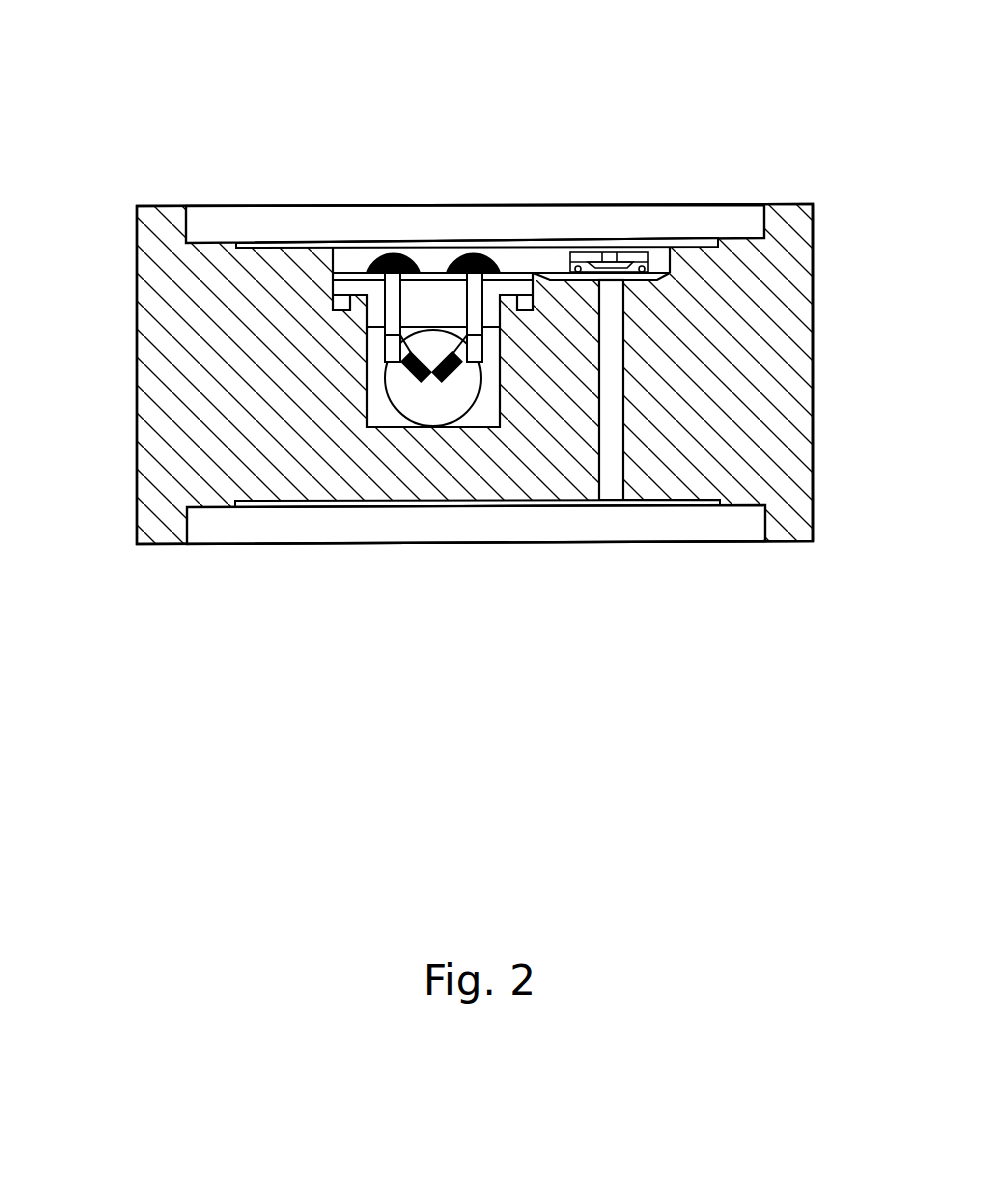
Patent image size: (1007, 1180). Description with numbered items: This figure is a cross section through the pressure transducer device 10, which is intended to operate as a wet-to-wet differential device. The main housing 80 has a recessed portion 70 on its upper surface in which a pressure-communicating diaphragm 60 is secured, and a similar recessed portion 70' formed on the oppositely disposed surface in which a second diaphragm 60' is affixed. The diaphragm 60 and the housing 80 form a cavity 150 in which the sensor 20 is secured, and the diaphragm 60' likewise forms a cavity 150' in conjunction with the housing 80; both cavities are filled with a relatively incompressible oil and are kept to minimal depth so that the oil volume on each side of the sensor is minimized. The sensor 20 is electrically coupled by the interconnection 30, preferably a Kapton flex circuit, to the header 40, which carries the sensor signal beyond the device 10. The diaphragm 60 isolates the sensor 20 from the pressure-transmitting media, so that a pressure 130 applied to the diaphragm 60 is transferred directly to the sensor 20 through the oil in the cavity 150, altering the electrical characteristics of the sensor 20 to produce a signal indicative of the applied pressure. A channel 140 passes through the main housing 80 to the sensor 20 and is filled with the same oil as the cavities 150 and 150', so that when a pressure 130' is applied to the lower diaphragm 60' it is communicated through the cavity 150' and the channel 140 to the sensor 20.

The device 10 is at (106, 152).
The sensor 20 is at (672, 281).
The interconnection 30 is at (333, 277).
The header 40 is at (437, 309).
The pressure-communicating diaphragm 60 is at (635, 206).
The diaphragm 60' is at (659, 554).
The recessed portion 70 is at (475, 184).
The recessed portion 70' is at (476, 572).
The main housing 80 is at (813, 273).
The pressure 130 is at (477, 121).
The pressure 130' is at (477, 629).
The channel 140 is at (610, 447).
The cavity 150 is at (477, 201).
The cavity 150' is at (477, 538).